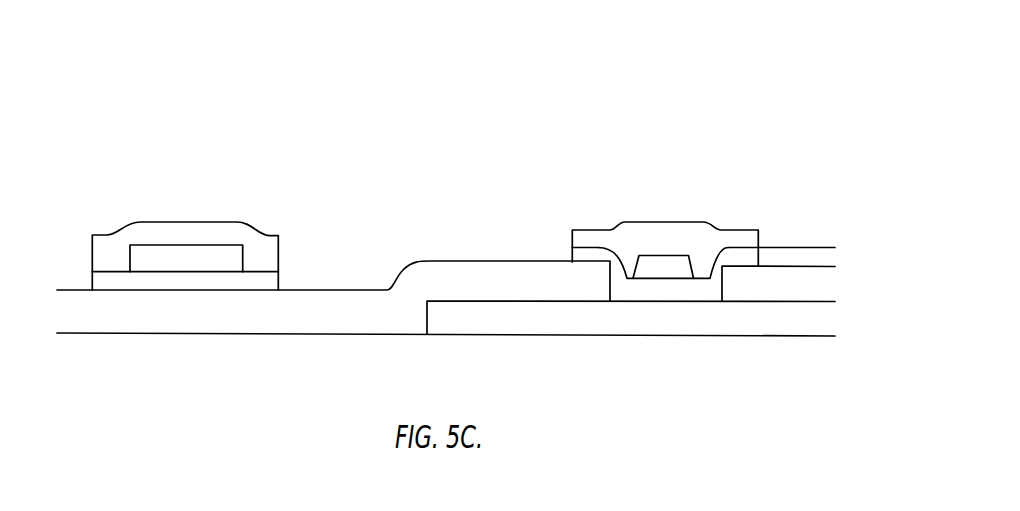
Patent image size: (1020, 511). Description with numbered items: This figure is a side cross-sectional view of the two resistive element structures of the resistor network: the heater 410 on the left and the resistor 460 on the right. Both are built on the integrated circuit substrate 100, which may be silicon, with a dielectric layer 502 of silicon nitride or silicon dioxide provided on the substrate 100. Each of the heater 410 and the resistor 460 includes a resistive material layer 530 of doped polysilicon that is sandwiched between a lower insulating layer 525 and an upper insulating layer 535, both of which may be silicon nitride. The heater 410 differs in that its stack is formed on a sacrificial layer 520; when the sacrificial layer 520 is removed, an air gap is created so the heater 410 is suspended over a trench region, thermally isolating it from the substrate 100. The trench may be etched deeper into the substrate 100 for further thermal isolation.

The integrated circuit substrate 100 is at (802, 362).
The dielectric layer 502 is at (820, 320).
The sacrificial layer 520 is at (820, 287).
The insulating layer 525 is at (267, 282).
The resistive material layer 530 is at (227, 255).
The insulating layer 535 is at (207, 223).
The heater 410 is at (172, 187).
The resistor 460 is at (657, 192).